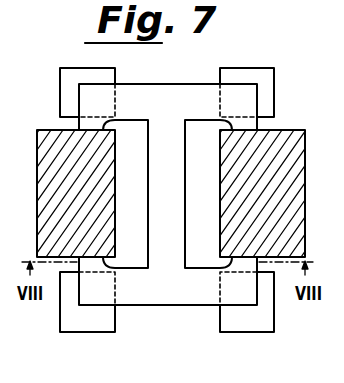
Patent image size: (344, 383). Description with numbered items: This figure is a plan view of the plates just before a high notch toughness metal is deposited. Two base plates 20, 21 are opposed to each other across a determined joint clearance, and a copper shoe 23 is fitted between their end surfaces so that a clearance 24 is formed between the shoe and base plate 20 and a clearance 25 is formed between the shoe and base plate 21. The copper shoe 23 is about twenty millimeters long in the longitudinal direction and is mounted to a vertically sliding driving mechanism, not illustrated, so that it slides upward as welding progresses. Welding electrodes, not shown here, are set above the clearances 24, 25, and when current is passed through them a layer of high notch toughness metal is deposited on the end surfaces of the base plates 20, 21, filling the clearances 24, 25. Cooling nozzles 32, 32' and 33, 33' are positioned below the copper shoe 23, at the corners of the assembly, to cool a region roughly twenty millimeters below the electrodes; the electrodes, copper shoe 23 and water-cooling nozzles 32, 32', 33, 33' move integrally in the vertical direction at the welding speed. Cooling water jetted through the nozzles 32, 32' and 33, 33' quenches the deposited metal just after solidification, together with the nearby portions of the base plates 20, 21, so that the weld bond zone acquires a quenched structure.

The base plate 20 is at (53, 127).
The base plate 21 is at (279, 140).
The copper shoe 23 is at (163, 96).
The clearance 24 is at (139, 206).
The clearance 25 is at (209, 206).
The cooling nozzle 32 is at (78, 70).
The cooling nozzle 33 is at (250, 71).
The cooling nozzle 32' is at (86, 322).
The cooling nozzle 33' is at (251, 323).